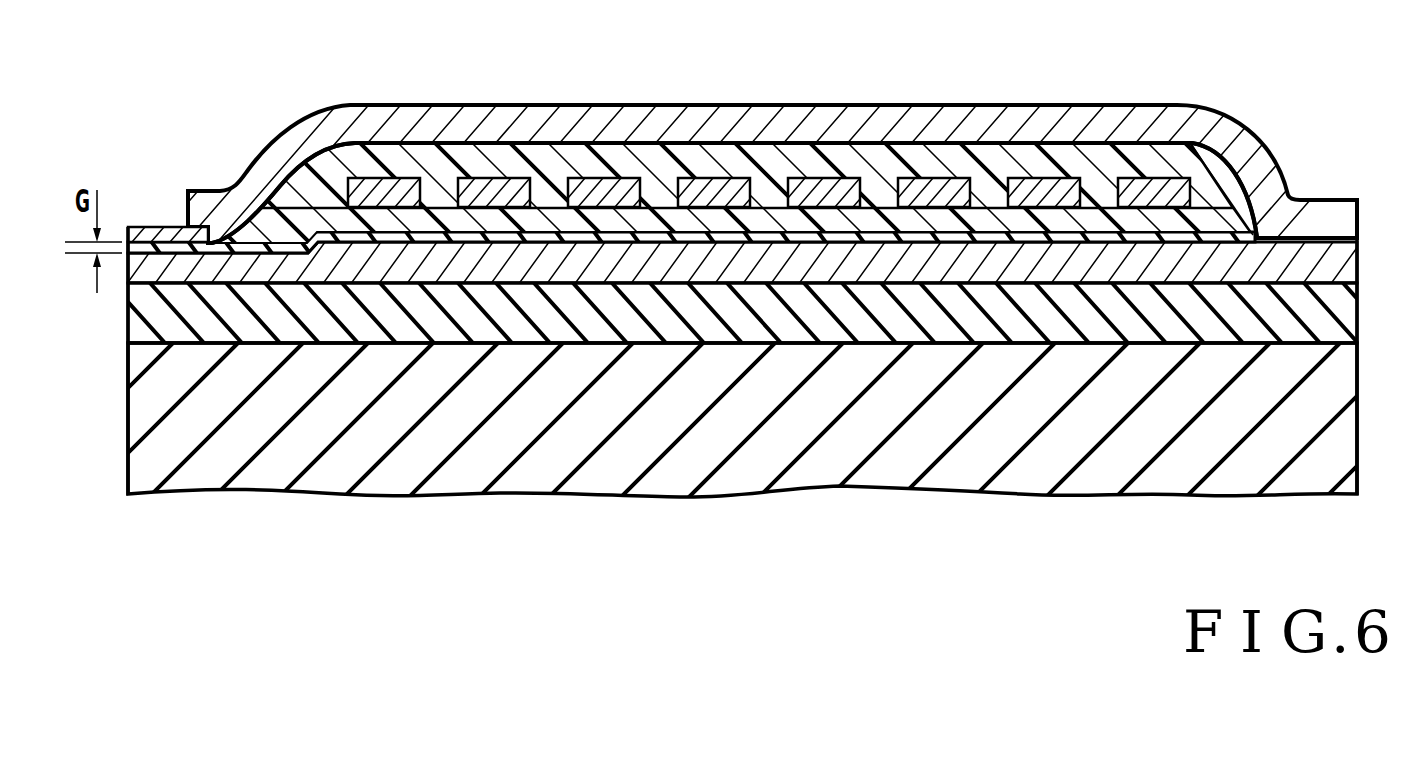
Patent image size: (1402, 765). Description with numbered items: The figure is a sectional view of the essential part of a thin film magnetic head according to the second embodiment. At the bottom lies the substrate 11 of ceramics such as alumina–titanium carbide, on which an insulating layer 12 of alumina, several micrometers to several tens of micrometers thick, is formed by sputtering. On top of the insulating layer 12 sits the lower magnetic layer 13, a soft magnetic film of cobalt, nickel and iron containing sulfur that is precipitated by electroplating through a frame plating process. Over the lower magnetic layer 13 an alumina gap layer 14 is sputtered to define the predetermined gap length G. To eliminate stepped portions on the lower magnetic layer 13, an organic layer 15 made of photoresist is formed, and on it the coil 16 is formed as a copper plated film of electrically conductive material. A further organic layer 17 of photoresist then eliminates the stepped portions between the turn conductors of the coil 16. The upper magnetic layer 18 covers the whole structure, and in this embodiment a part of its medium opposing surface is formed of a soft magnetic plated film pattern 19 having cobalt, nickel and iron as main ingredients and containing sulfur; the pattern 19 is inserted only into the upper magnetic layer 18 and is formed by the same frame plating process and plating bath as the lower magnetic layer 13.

The substrate 11 is at (437, 445).
The insulating layer 12 is at (630, 325).
The lower magnetic layer 13 is at (835, 270).
The gap layer 14 is at (887, 236).
The organic layer 15 is at (985, 217).
The coil 16 is at (818, 178).
The organic layer 17 is at (512, 158).
The upper magnetic layer 18 is at (397, 105).
The soft magnetic plated film pattern 19 is at (153, 230).